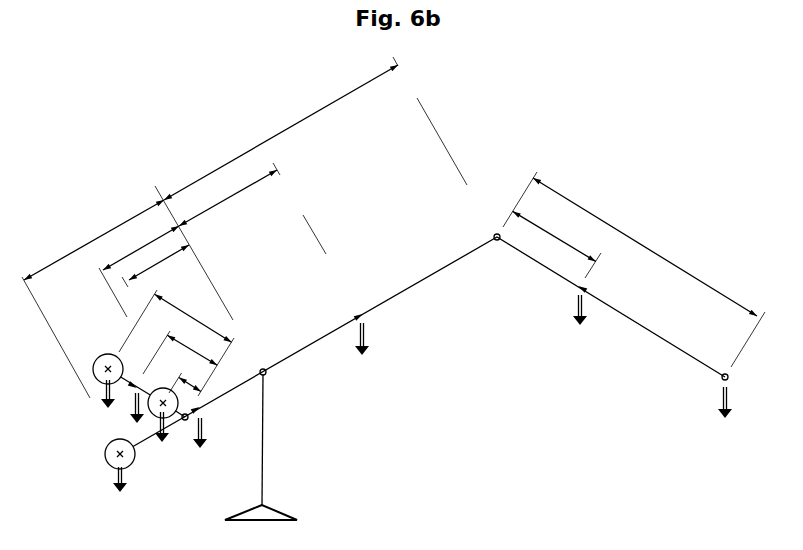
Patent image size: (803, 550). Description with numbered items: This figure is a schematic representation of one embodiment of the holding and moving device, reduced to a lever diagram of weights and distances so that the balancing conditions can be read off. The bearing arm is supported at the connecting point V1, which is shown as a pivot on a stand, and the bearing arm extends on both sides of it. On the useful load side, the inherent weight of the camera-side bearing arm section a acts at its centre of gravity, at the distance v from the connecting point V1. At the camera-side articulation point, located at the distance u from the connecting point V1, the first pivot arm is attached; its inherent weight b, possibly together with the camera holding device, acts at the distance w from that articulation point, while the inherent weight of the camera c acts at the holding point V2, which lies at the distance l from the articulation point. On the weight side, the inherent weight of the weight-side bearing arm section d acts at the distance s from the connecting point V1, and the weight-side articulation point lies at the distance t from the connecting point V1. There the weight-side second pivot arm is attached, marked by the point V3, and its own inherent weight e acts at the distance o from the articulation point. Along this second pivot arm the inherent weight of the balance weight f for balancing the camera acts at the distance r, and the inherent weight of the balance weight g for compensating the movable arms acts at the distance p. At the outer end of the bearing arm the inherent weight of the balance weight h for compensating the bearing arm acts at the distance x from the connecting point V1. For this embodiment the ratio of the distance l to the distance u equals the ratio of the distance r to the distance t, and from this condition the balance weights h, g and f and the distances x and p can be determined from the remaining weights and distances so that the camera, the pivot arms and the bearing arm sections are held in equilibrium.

The connecting point V1 is at (267, 374).
The holding point V2 is at (720, 378).
The roller pivot point V3 is at (108, 368).
The inherent weight of the useful load side bearing arm section a is at (361, 347).
The inherent weight of the first pivot arm b is at (580, 322).
The inherent weight of the camera c is at (725, 416).
The inherent weight of the weight-side bearing arm section d is at (199, 442).
The inherent weight of the weight-side second pivot arm e is at (129, 410).
The inherent weight of the balance weight for balancing the camera f is at (104, 407).
The inherent weight of the balance weight for compensating the movable arms g is at (163, 425).
The inherent weight of the balance weight for compensating the bearing arm h is at (120, 481).
The distance from connecting point to balance weight h x is at (93, 299).
The distance from connecting point to useful load side articulation point u is at (315, 128).
The distance from connecting point to weight-side articulation point t is at (139, 271).
The distance from connecting point to centre of gravity of weight-side bearing arm s is at (155, 265).
The distance from connecting point to centre of gravity of useful load side bearing v is at (240, 241).
The distance from weight-side articulation point to balance weight f r is at (176, 343).
The distance from weight-side articulation point to centre of gravity of second pivo o is at (180, 349).
The distance from weight-side articulation point to balance weight g p is at (189, 374).
The distance from useful load side articulation point to centre of gravity of first w is at (552, 225).
The distance from useful load side articulation point to holding point l is at (649, 272).